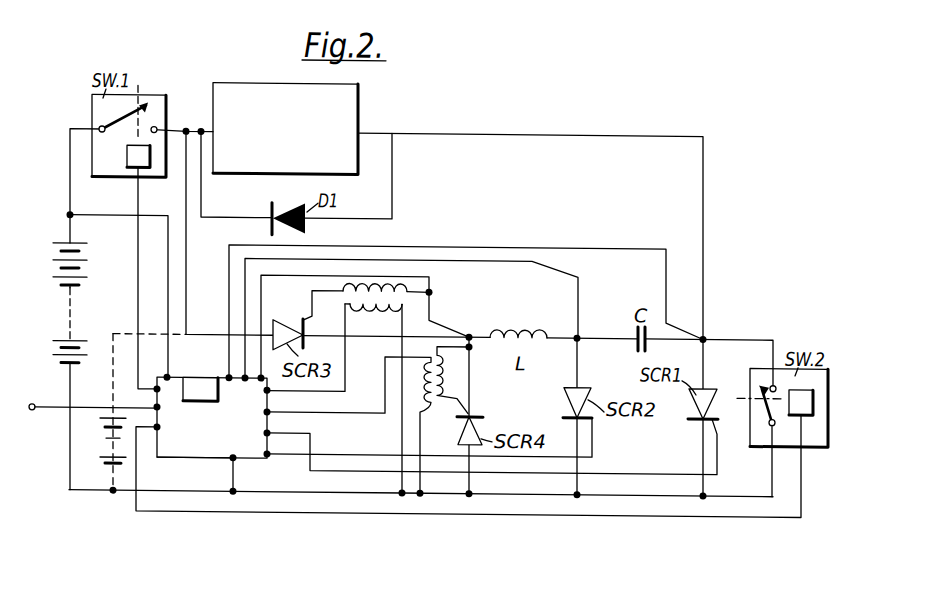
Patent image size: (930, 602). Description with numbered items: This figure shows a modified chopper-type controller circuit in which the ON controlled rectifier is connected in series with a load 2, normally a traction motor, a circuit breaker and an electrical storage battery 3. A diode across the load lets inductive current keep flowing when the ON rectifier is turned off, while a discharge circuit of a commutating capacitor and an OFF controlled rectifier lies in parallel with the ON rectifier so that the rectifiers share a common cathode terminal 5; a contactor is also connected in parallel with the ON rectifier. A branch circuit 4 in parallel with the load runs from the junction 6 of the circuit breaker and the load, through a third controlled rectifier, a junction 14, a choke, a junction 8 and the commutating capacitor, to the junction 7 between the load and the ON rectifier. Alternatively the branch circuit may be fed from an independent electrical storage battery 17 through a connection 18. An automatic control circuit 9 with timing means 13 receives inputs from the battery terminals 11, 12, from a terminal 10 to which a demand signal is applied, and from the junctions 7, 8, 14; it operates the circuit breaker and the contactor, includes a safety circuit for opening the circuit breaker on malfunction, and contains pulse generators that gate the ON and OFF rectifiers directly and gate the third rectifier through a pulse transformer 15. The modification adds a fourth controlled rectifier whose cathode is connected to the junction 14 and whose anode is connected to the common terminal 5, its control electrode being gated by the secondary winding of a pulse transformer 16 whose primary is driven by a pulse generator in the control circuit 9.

The load 2 is at (356, 128).
The electrical storage battery 3 is at (72, 318).
The branch circuit 4 is at (375, 338).
The common cathode terminal 5 is at (580, 490).
The junction 6 is at (192, 121).
The junction 7 is at (706, 335).
The junction 8 is at (581, 333).
The automatic control circuit 9 is at (183, 461).
The terminal 10 is at (32, 405).
The battery terminal 11 is at (73, 216).
The battery terminal 12 is at (237, 491).
The timing means 13 is at (189, 379).
The junction 14 is at (474, 341).
The pulse transformer 15 is at (370, 290).
The pulse transformer 16 is at (432, 402).
The electrical storage battery 17 is at (140, 452).
The connection 18 is at (112, 385).